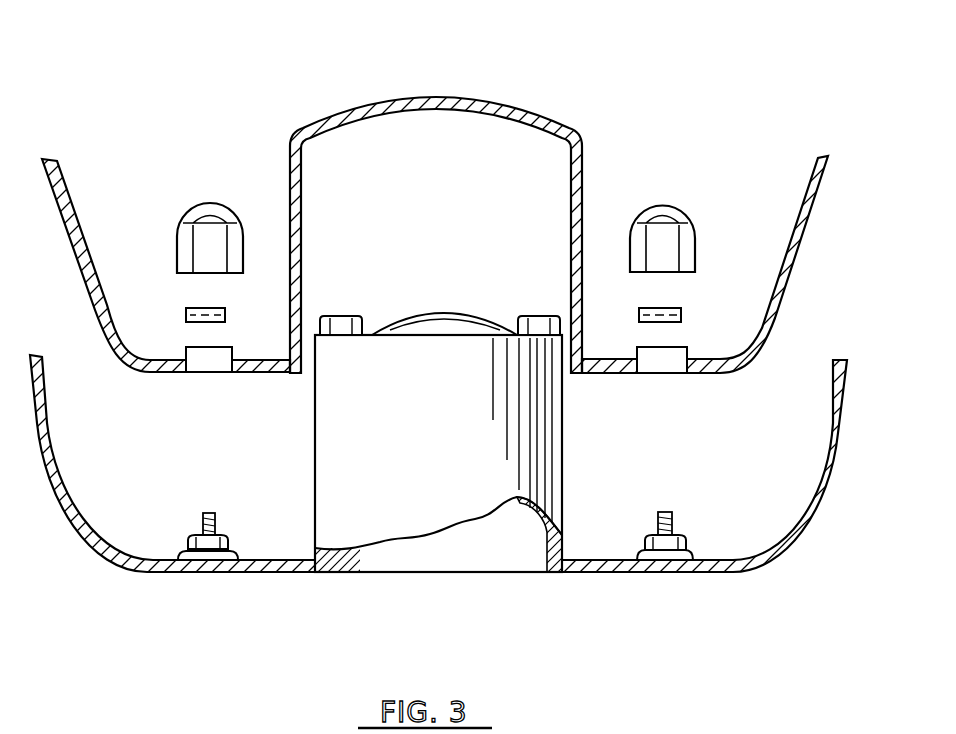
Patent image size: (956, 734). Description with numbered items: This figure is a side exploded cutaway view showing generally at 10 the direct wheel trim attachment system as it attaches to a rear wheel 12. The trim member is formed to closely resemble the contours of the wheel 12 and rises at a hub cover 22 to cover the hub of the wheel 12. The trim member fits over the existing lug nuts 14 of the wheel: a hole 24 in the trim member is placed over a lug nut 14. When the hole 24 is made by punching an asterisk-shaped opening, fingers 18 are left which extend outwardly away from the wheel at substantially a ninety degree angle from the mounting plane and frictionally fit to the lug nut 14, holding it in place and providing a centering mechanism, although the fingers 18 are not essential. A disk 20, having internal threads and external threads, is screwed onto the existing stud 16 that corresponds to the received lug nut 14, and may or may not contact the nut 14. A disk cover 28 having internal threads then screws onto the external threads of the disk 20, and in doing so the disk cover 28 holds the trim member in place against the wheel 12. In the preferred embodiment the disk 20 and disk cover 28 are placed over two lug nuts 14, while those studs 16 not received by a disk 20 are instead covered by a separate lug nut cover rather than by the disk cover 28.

The direct wheel trim attachment system 10 is at (571, 77).
The rear wheel 12 is at (827, 435).
The lug nut 14 is at (230, 541).
The stud 16 is at (201, 515).
The fingers 18 is at (183, 356).
The disk 20 is at (185, 307).
The hub cover 22 is at (443, 98).
The hole 24 is at (215, 363).
The disk cover 28 is at (205, 207).